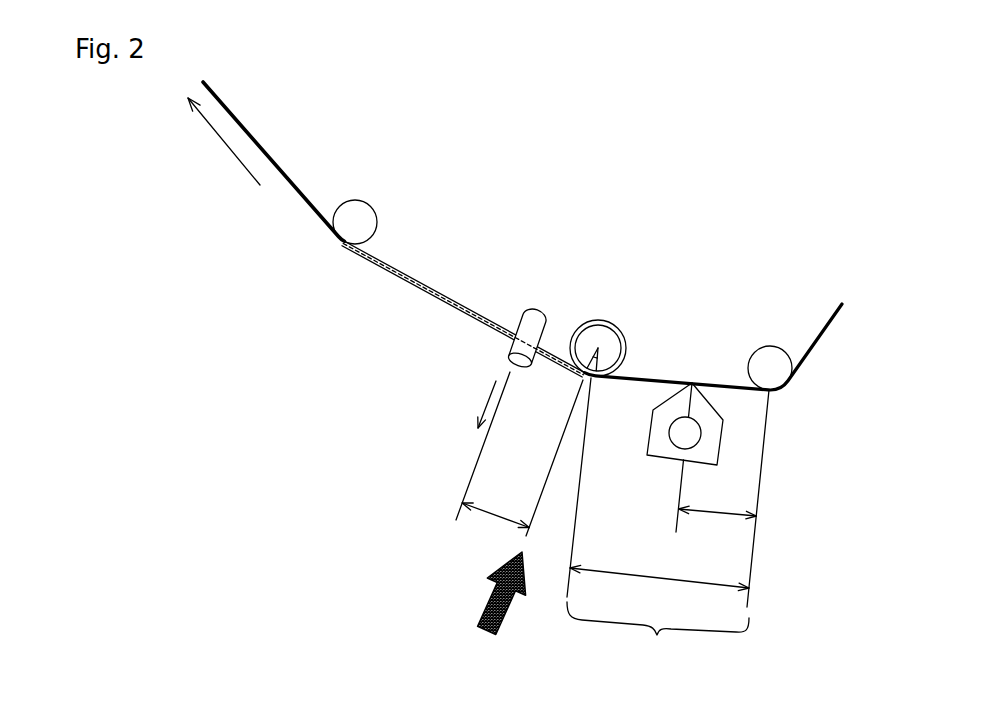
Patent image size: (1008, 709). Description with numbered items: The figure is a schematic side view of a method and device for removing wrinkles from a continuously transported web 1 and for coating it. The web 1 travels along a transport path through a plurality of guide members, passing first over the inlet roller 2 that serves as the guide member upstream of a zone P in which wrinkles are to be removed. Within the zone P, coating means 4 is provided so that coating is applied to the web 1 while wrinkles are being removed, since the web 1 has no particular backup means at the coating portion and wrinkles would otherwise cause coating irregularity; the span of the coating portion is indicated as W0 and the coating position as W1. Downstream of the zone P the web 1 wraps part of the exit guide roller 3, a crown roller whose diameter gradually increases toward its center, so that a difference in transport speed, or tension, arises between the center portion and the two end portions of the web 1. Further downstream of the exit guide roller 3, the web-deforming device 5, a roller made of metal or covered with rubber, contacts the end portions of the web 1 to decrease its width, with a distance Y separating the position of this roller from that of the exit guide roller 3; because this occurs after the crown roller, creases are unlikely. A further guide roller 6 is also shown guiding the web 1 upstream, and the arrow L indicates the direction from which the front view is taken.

The web 1 is at (285, 173).
The inlet roller 2 is at (768, 347).
The exit guide roller 3 is at (597, 320).
The coating means 4 is at (722, 447).
The web-deforming device 5 is at (508, 356).
The roller 6 is at (372, 208).
The distance Y is at (519, 460).
The arrow L is at (500, 611).
The span of coating portion W0 is at (668, 492).
The coating position W1 is at (716, 496).
The zone P is at (658, 636).